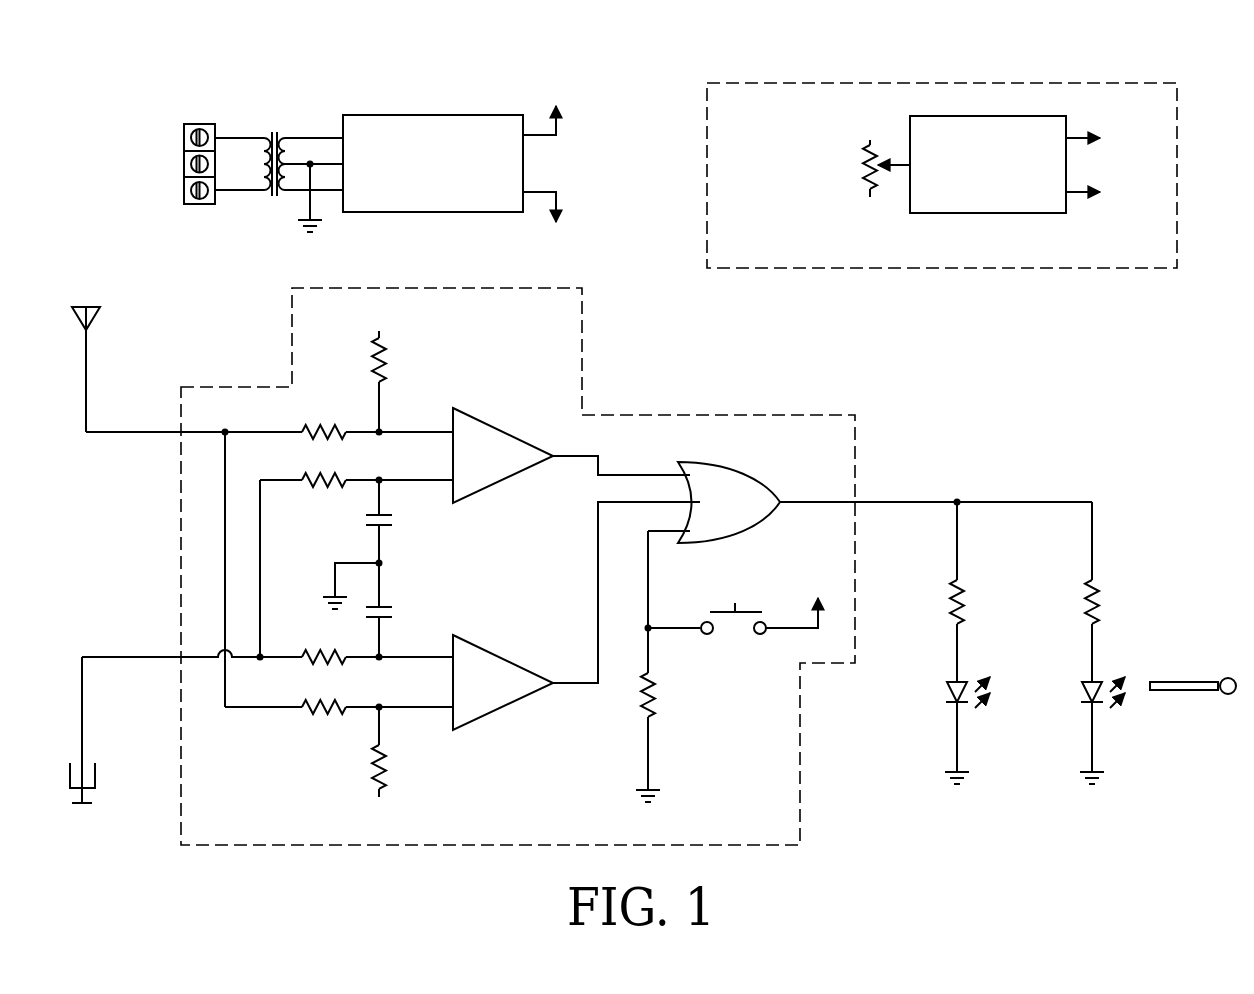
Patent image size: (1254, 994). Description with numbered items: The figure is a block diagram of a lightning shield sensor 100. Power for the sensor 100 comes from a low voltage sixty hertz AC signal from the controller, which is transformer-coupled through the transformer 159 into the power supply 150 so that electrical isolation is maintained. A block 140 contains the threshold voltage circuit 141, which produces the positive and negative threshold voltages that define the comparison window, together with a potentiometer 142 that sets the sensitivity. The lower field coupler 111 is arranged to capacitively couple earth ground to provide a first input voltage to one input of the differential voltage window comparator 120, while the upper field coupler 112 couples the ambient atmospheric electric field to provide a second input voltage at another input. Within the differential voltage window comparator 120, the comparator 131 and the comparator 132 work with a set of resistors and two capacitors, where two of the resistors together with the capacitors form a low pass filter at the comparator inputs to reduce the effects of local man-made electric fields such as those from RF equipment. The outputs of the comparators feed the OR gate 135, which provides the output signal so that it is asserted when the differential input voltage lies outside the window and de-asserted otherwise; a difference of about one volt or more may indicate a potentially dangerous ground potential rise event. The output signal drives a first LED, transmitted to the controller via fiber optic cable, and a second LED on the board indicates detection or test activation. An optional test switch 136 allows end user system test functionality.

The lightning shield sensor 100 is at (665, 52).
The lower field coupler 111 is at (82, 727).
The upper field coupler 112 is at (86, 355).
The differential voltage window comparator 120 is at (587, 584).
The comparator 131 is at (497, 425).
The comparator 132 is at (505, 713).
The OR gate 135 is at (725, 462).
The test switch 136 is at (718, 612).
The block 140 is at (942, 192).
The threshold voltage circuit 141 is at (988, 213).
The potentiometer 142 is at (862, 184).
The power supply 150 is at (405, 213).
The transformer 159 is at (282, 128).